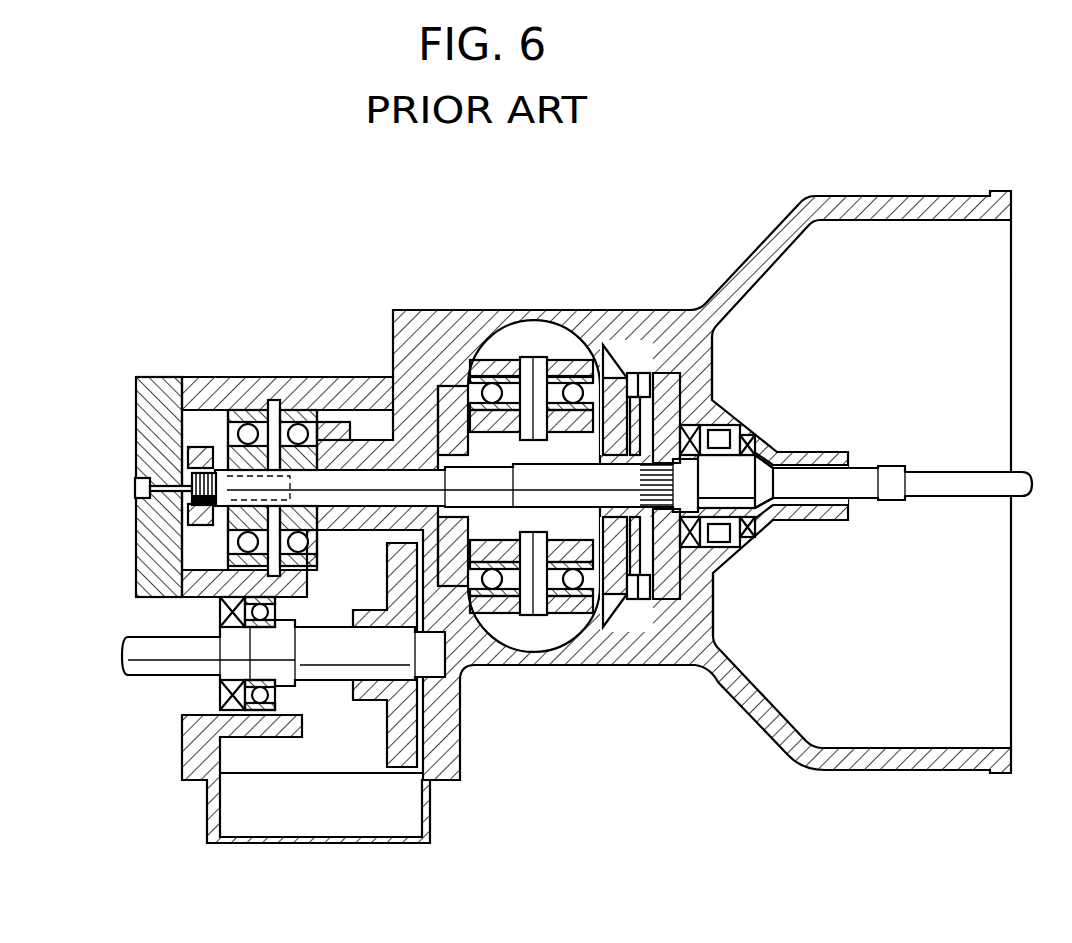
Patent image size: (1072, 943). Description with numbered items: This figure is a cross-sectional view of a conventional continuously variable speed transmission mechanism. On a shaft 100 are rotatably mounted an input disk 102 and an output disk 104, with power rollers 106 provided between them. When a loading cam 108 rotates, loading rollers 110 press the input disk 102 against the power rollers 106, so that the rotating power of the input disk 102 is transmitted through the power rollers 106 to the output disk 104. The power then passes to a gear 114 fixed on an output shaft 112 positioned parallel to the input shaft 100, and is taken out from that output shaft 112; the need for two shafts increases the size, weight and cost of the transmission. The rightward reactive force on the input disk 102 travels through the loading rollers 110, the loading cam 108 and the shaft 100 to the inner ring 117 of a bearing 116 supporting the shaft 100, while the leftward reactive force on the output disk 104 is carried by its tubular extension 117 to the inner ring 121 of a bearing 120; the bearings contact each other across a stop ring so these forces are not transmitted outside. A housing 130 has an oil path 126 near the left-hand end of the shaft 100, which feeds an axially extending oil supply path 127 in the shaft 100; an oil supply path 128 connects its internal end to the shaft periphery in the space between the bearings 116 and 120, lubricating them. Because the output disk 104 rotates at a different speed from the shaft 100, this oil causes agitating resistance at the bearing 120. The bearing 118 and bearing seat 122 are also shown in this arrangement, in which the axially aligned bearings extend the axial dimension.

The shaft 100 is at (737, 470).
The input disk 102 is at (617, 372).
The output disk 104 is at (455, 377).
The power rollers 106 is at (559, 340).
The loading cam 108 is at (713, 370).
The loading rollers 110 is at (652, 375).
The output shaft 112 is at (310, 643).
The gear 114 is at (383, 697).
The bearing 116 is at (227, 378).
The tubular extension 117 is at (228, 436).
The bearing 118 is at (240, 410).
The bearing 120 is at (293, 410).
The inner ring 121 is at (320, 430).
The bearing seat 122 is at (327, 410).
The oil path 126 is at (135, 488).
The oil supply path 127 is at (200, 512).
The oil supply path 128 is at (250, 545).
The housing 130 is at (752, 248).